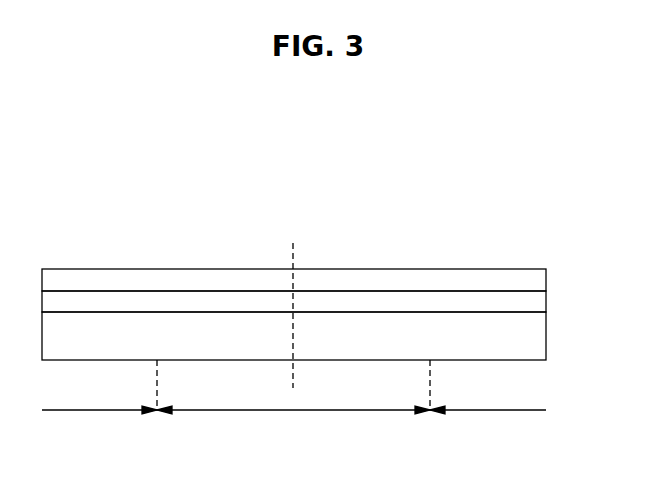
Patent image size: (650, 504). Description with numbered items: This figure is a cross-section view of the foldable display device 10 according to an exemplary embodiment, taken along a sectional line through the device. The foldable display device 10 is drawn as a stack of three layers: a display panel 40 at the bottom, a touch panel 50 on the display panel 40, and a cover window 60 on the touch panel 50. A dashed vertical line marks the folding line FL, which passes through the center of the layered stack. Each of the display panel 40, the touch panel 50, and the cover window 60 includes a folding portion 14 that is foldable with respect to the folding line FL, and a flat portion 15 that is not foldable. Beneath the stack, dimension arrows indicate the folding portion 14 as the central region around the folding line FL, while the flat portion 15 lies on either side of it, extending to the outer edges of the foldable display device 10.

The foldable display device 10 is at (321, 238).
The folding portion 14 is at (293, 412).
The flat portion 15 is at (92, 412).
The display panel 40 is at (535, 333).
The touch panel 50 is at (535, 300).
The cover window 60 is at (535, 278).
The folding line FL is at (295, 255).